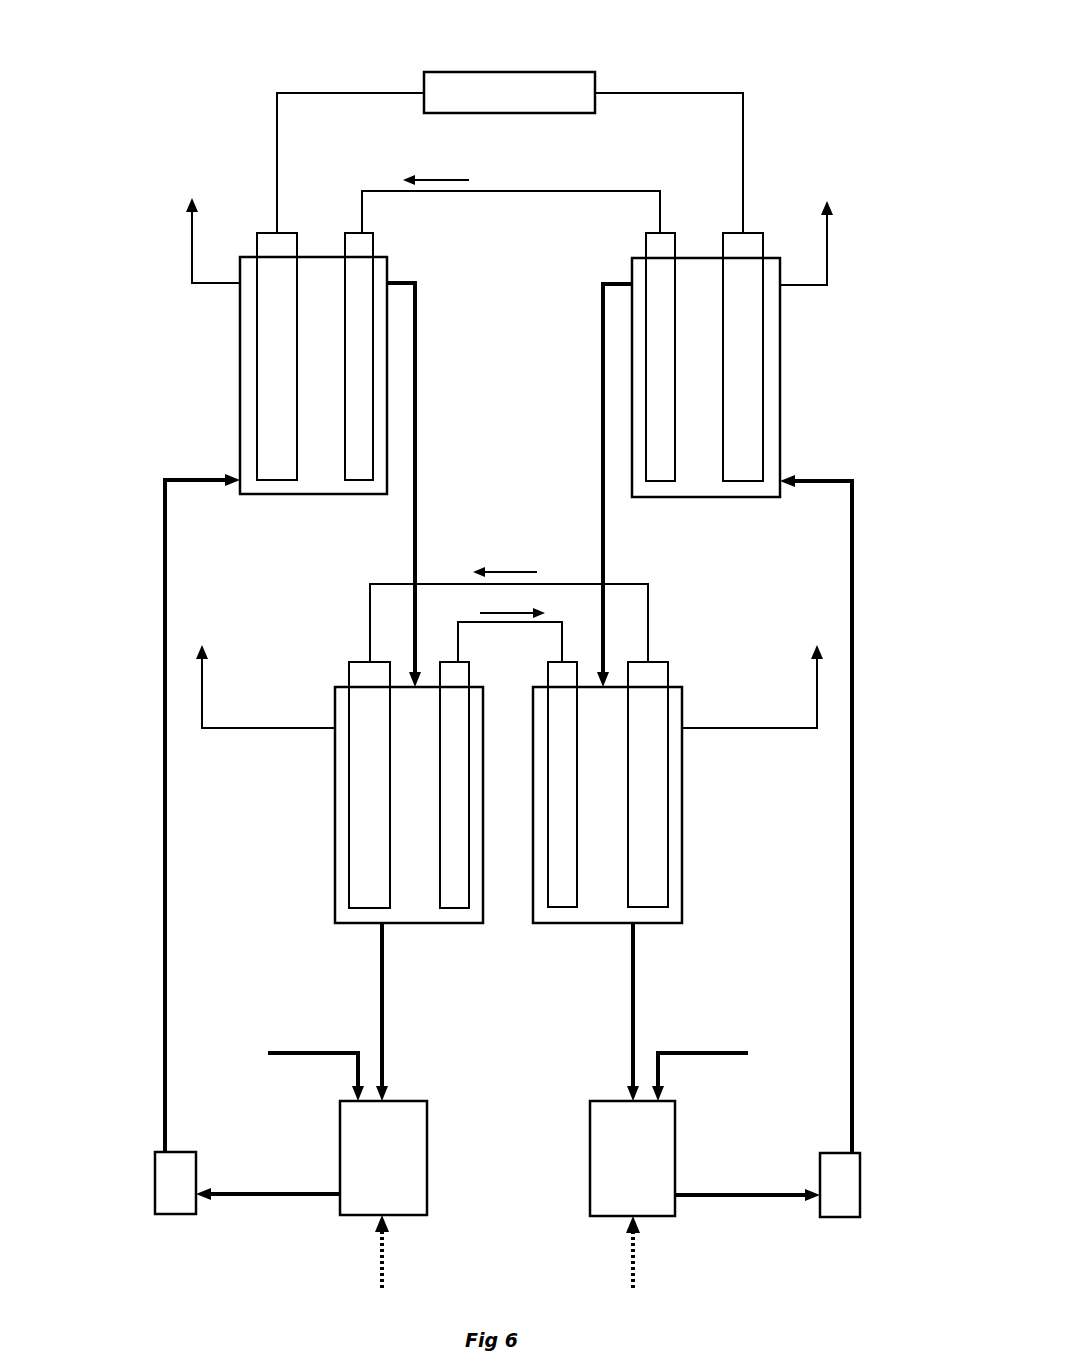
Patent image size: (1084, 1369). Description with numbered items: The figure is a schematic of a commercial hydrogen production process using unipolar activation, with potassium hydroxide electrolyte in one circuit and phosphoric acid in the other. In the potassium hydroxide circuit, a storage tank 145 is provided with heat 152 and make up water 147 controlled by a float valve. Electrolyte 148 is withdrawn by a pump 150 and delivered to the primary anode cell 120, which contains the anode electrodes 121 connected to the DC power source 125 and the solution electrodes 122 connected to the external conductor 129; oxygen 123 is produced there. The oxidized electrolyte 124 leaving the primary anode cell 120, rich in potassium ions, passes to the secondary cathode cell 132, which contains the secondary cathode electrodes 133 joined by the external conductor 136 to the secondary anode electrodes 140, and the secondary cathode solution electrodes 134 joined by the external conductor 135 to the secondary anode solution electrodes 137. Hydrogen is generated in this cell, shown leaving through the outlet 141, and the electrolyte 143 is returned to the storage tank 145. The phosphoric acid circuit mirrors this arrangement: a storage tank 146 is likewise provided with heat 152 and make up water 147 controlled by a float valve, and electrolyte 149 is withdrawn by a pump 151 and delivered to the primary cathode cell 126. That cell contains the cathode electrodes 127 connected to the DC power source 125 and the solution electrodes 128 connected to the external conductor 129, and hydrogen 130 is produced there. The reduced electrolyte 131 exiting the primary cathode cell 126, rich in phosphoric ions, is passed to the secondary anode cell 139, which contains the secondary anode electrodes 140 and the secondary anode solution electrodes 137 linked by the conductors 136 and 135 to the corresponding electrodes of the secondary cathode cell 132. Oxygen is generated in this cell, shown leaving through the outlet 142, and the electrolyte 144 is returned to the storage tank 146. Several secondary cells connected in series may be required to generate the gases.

The primary anode cell 120 is at (240, 446).
The anode electrode 121 is at (272, 368).
The solution electrode 122 is at (373, 243).
The oxygen 123 is at (192, 258).
The oxidized electrolyte 124 is at (415, 410).
The DC power source 125 is at (552, 72).
The primary cathode cell 126 is at (780, 446).
The cathode electrode 127 is at (752, 368).
The solution electrode 128 is at (646, 243).
The external conductor 129 is at (538, 191).
The hydrogen 130 is at (827, 260).
The reduced electrolyte 131 is at (603, 410).
The secondary cathode cell 132 is at (335, 872).
The secondary cathode electrode 133 is at (365, 808).
The secondary cathode solution electrode 134 is at (460, 895).
The external conductor 135 is at (458, 640).
The external conductor 136 is at (370, 584).
The secondary anode solution electrode 137 is at (562, 895).
The secondary anode cell 139 is at (682, 872).
The secondary anode electrode 140 is at (650, 810).
The hydrogen outlet 141 is at (202, 705).
The oxygen outlet 142 is at (817, 705).
The electrolyte 143 is at (388, 960).
The electrolyte 144 is at (628, 960).
The storage tank 145 is at (340, 1128).
The storage tank 146 is at (675, 1128).
The make up water 147 is at (305, 1053).
The electrolyte 148 is at (165, 965).
The electrolyte 149 is at (852, 965).
The pump 150 is at (175, 1198).
The pump 151 is at (840, 1200).
The heat 152 is at (380, 1262).